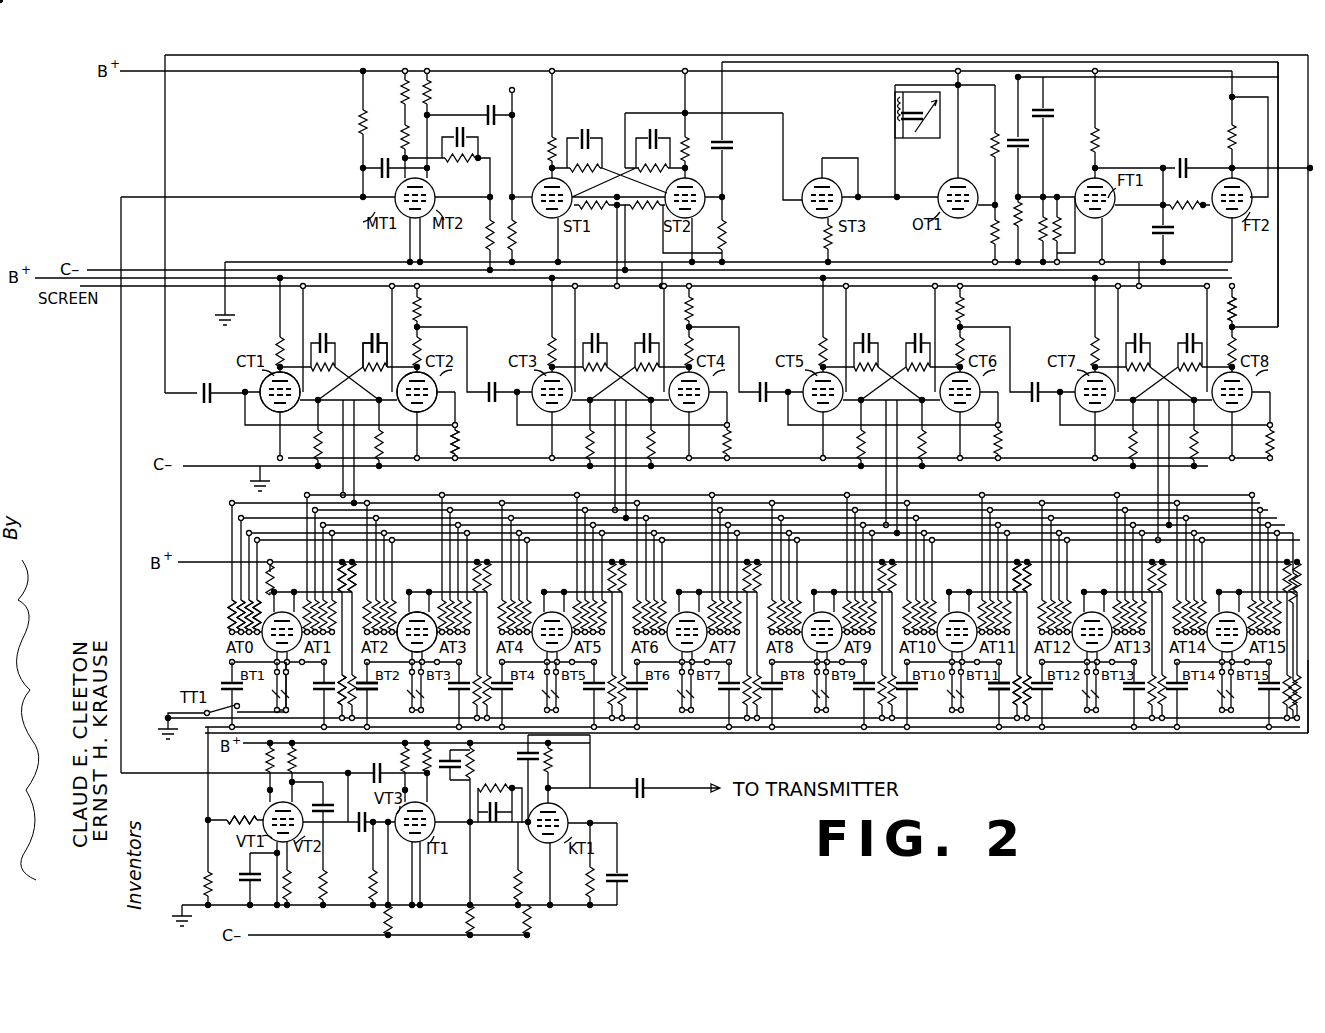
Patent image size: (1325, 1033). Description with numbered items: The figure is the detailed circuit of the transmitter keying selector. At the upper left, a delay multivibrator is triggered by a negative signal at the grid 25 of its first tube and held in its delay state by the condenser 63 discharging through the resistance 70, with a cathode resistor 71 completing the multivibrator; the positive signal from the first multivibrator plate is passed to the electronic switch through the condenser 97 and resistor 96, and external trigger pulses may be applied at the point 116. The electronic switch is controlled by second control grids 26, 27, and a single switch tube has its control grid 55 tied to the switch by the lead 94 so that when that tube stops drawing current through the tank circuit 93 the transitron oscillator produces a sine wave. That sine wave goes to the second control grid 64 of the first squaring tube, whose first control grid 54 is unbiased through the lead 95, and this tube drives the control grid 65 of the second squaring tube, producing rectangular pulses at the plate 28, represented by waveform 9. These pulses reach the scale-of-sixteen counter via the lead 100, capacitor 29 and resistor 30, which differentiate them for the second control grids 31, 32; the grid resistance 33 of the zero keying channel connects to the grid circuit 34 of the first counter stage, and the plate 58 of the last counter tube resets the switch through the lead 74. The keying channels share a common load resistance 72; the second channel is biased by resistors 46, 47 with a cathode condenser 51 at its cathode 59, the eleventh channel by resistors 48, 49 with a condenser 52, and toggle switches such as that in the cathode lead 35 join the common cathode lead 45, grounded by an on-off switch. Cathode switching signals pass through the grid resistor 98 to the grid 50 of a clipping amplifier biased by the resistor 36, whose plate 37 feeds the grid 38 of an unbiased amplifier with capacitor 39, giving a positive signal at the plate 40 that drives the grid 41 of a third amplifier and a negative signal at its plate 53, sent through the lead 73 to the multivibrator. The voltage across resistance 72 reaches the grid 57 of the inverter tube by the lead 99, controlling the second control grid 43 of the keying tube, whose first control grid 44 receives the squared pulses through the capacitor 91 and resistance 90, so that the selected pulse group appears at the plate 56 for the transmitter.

The waveform 9 is at (1294, 702).
The grid of MT1 25 is at (398, 192).
The second control grid of ST1 26 is at (540, 186).
The second control grid of ST2 27 is at (702, 188).
The plate of FT2 28 is at (1230, 186).
The capacitor 29 is at (209, 403).
The resistor 30 is at (456, 454).
The second control grid of CT1 31 is at (254, 392).
The second control grid of CT2 32 is at (460, 384).
The grid resistance 33 is at (229, 620).
The grid circuit of first counter stage 34 is at (385, 358).
The cathode lead of AT1 35 is at (288, 702).
The cathode biasing resistor 36 is at (290, 888).
The plate of VT1 37 is at (268, 795).
The grid of VT2 38 is at (353, 825).
The capacitor 39 is at (329, 798).
The plate of VT2 40 is at (292, 812).
The grid of VT3 41 is at (398, 887).
The second control grid of KT1 43 is at (516, 795).
The first control grid of KT1 44 is at (548, 830).
The common cathode lead 45 is at (268, 713).
The voltage dividing resistance 46 is at (360, 574).
The voltage dividing resistance 47 is at (356, 693).
The resistor 48 is at (1010, 574).
The resistor 49 is at (1025, 688).
The grid of VT1 50 is at (242, 808).
The cathode condenser 51 is at (370, 692).
The cathode condenser 52 is at (998, 690).
The plate of VT3 53 is at (409, 772).
The first control grid of FT1 54 is at (1095, 207).
The control grid of ST3 55 is at (807, 185).
The plate of KT1 56 is at (566, 786).
The grid of IT1 57 is at (434, 819).
The plate of CT8 58 is at (1230, 354).
The cathode of AT2 59 is at (414, 620).
The condenser 63 is at (385, 156).
The second control grid of FT1 64 is at (1064, 194).
The control grid of FT2 65 is at (1202, 208).
The resistance 70 is at (360, 130).
The cathode resistor 71 is at (490, 234).
The common load resistance 72 is at (272, 592).
The lead 73 is at (146, 773).
The lead 74 is at (1278, 292).
The resistance 90 is at (529, 882).
The capacitor 91 is at (517, 762).
The tank circuit 93 is at (945, 141).
The lead 94 is at (741, 115).
The lead 95 is at (734, 258).
The resistor 96 is at (518, 235).
The condenser 97 is at (490, 106).
The grid resistor 98 is at (208, 880).
The lead 99 is at (474, 854).
The lead 100 is at (1281, 112).
The point in grid circuit of ST1 116 is at (532, 141).